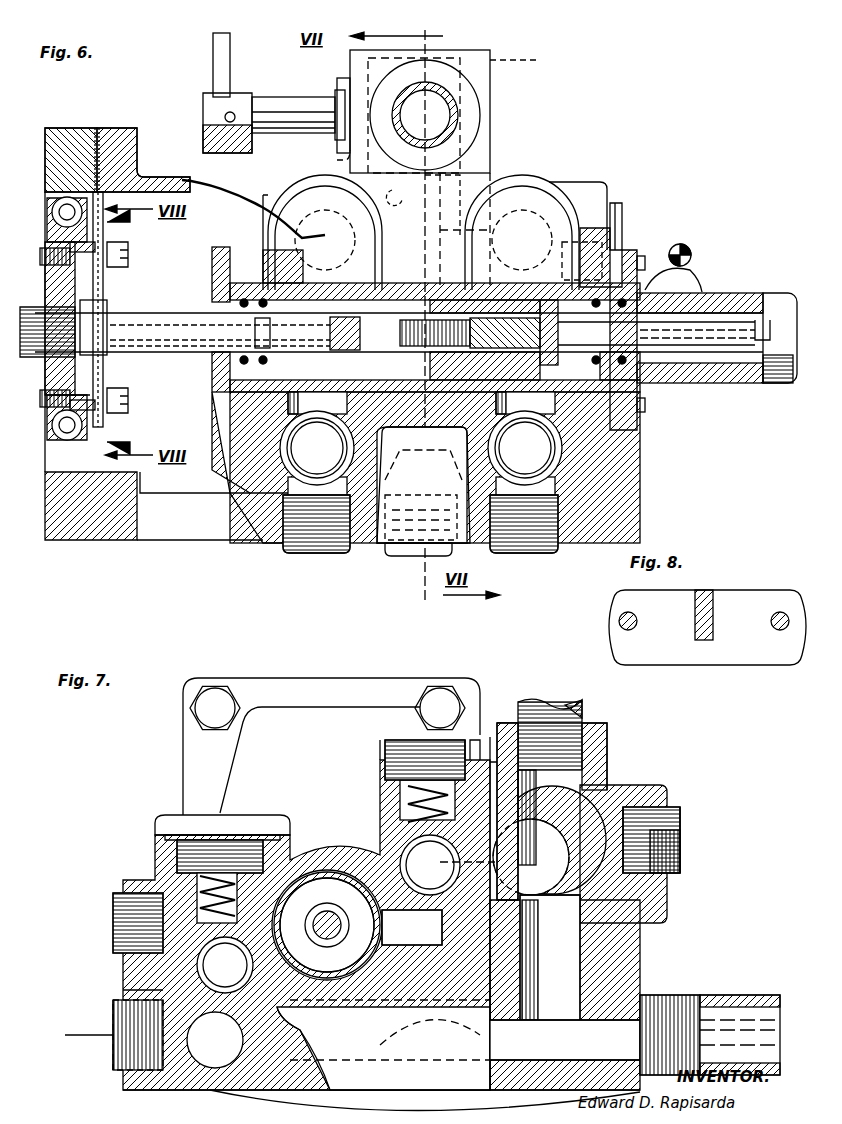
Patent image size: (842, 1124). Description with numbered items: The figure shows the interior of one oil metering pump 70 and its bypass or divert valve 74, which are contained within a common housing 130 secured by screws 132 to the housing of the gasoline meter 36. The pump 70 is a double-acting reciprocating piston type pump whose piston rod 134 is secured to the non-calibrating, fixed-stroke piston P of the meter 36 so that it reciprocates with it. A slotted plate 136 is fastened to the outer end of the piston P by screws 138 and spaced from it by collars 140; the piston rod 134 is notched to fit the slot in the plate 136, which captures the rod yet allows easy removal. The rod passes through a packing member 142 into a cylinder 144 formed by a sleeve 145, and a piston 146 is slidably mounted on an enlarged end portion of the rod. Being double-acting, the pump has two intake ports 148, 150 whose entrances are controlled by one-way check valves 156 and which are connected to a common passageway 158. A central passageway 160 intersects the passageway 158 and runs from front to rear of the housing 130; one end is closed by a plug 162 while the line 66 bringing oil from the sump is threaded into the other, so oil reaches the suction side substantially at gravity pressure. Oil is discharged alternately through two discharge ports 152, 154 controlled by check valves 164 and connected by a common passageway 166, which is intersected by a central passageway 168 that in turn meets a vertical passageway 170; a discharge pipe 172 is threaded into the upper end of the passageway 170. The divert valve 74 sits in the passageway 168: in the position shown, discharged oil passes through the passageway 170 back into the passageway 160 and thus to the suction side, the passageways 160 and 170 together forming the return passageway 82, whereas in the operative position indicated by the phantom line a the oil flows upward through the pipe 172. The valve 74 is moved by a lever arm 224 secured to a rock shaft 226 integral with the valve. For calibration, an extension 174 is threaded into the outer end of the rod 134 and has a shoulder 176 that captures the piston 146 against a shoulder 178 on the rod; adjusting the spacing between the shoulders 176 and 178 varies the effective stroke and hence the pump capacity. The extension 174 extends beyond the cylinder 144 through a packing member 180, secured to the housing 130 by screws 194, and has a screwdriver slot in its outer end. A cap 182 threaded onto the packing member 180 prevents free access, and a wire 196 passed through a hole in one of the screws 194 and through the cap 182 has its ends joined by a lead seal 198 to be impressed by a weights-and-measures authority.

In FIG. 6, the meter 36 is at (62, 545).
In FIG. 7, the line 66 is at (672, 997).
In FIG. 6, the metering pump 70 is at (648, 225).
In FIG. 7, the metering pump 70 is at (316, 785).
In FIG. 6, the bypass valve 74 is at (320, 150).
In FIG. 7, the bypass valve 74 is at (598, 800).
In FIG. 7, the return passageway 82 is at (552, 995).
In FIG. 6, the common housing 130 is at (215, 480).
In FIG. 7, the common housing 130 is at (322, 1010).
In FIG. 7, the screws 132 is at (238, 690).
In FIG. 6, the piston rod 134 is at (195, 362).
In FIG. 8, the piston rod 134 is at (706, 590).
In FIG. 7, the piston rod 134 is at (305, 945).
In FIG. 6, the slotted plate 136 is at (107, 306).
In FIG. 8, the slotted plate 136 is at (735, 668).
In FIG. 6, the screws 138 is at (115, 418).
In FIG. 8, the screws 138 is at (619, 625).
In FIG. 6, the collars 140 is at (75, 390).
In FIG. 6, the packing member 142 is at (212, 405).
In FIG. 6, the cylinder 144 is at (380, 362).
In FIG. 6, the sleeve 145 is at (212, 262).
In FIG. 7, the sleeve 145 is at (332, 868).
In FIG. 6, the piston 146 is at (587, 334).
In FIG. 7, the piston 146 is at (382, 930).
In FIG. 6, the intake port 148 is at (315, 340).
In FIG. 6, the intake port 150 is at (600, 394).
In FIG. 7, the intake port 150 is at (318, 905).
In FIG. 6, the discharge port 152 is at (318, 290).
In FIG. 6, the discharge port 154 is at (540, 297).
In FIG. 6, the one-way check valves 156 is at (618, 498).
In FIG. 7, the one-way check valves 156 is at (245, 950).
In FIG. 6, the common passageway 158 is at (423, 485).
In FIG. 7, the common passageway 158 is at (240, 1040).
In FIG. 6, the central passageway 160 is at (438, 432).
In FIG. 7, the central passageway 160 is at (405, 1048).
In FIG. 6, the plug 162 is at (420, 556).
In FIG. 7, the plug 162 is at (101, 1030).
In FIG. 7, the check valves 164 is at (438, 905).
In FIG. 6, the common passageway 166 is at (390, 250).
In FIG. 7, the common passageway 166 is at (440, 832).
In FIG. 6, the central passageway 168 is at (396, 194).
In FIG. 7, the central passageway 168 is at (510, 872).
In FIG. 7, the vertical passageway 170 is at (583, 775).
In FIG. 6, the discharge pipe 172 is at (460, 112).
In FIG. 7, the discharge pipe 172 is at (580, 712).
In FIG. 6, the extension 174 is at (685, 365).
In FIG. 7, the extension 174 is at (338, 920).
In FIG. 6, the shoulder 176 is at (656, 329).
In FIG. 6, the shoulder 178 is at (398, 297).
In FIG. 6, the packing member 180 is at (630, 428).
In FIG. 6, the cap 182 is at (735, 383).
In FIG. 6, the screws 194 is at (645, 263).
In FIG. 6, the wire 196 is at (700, 280).
In FIG. 6, the lead seal 198 is at (691, 250).
In FIG. 6, the lever arm 224 is at (212, 72).
In FIG. 6, the rock shaft 226 is at (310, 100).
In FIG. 6, the piston P is at (75, 288).
In FIG. 7, the phantom line a is at (568, 900).